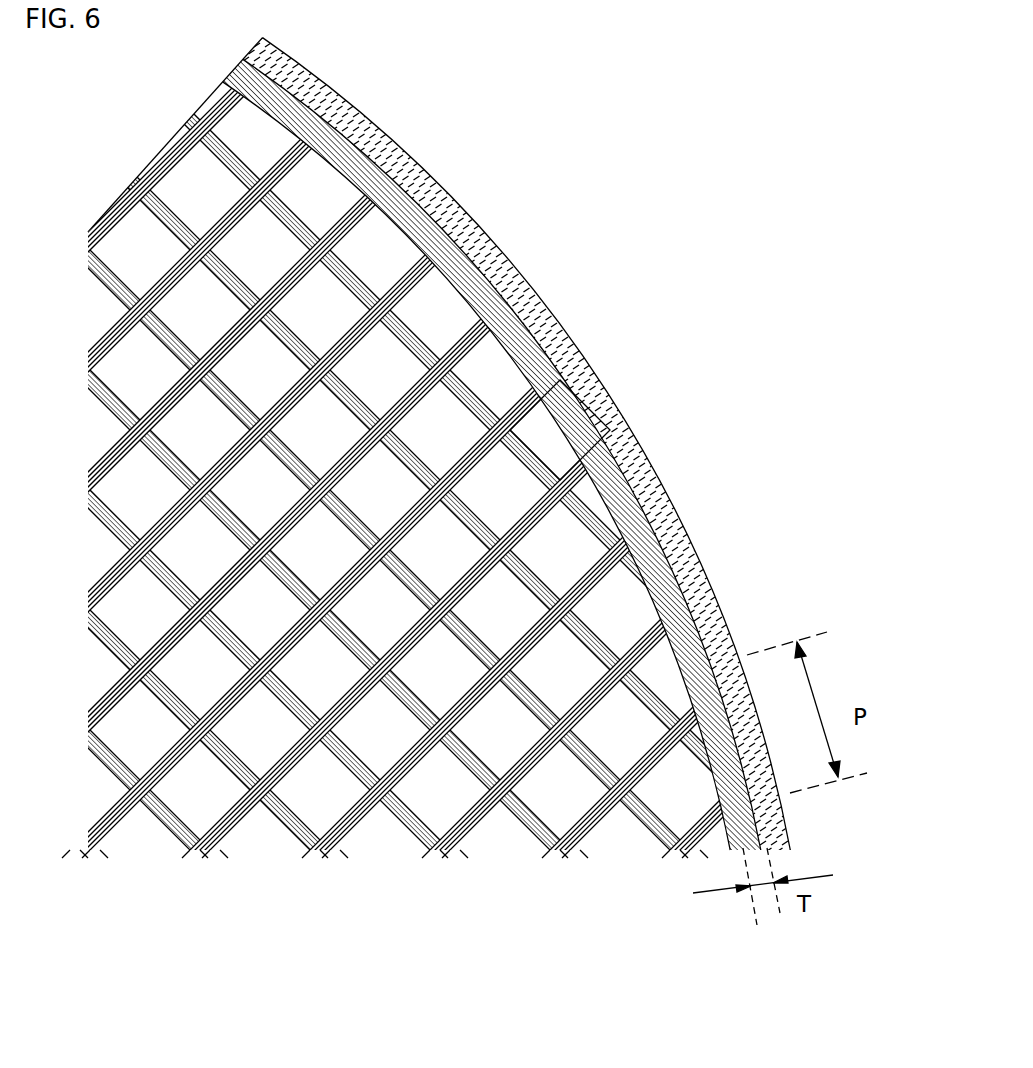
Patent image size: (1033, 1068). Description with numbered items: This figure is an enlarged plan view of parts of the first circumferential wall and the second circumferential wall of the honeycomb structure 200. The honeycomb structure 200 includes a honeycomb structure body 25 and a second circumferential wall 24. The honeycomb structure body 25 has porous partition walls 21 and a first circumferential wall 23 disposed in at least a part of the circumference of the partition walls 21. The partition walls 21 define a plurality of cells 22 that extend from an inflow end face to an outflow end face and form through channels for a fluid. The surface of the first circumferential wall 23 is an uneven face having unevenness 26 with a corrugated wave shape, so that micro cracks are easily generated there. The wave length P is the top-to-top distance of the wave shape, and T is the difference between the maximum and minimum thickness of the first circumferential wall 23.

The honeycomb structure 200 is at (709, 64).
The partition walls 21 is at (415, 395).
The cells 22 is at (375, 392).
The first circumferential wall 23 is at (550, 375).
The second circumferential wall 24 is at (710, 580).
The honeycomb structure body 25 is at (543, 447).
The unevenness 26 is at (643, 492).